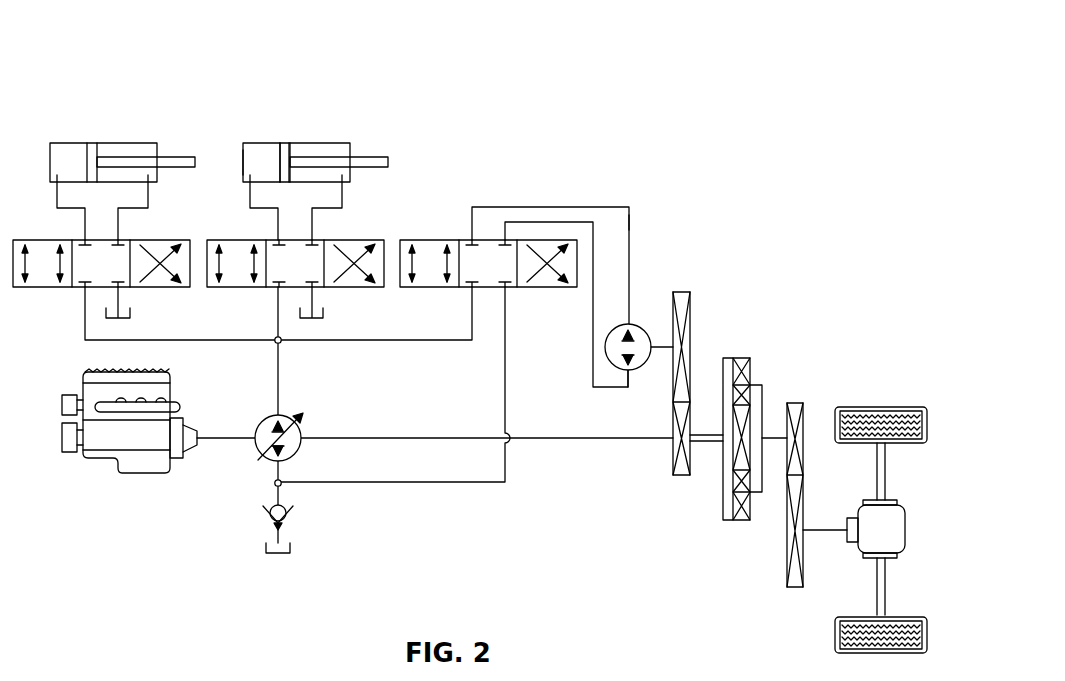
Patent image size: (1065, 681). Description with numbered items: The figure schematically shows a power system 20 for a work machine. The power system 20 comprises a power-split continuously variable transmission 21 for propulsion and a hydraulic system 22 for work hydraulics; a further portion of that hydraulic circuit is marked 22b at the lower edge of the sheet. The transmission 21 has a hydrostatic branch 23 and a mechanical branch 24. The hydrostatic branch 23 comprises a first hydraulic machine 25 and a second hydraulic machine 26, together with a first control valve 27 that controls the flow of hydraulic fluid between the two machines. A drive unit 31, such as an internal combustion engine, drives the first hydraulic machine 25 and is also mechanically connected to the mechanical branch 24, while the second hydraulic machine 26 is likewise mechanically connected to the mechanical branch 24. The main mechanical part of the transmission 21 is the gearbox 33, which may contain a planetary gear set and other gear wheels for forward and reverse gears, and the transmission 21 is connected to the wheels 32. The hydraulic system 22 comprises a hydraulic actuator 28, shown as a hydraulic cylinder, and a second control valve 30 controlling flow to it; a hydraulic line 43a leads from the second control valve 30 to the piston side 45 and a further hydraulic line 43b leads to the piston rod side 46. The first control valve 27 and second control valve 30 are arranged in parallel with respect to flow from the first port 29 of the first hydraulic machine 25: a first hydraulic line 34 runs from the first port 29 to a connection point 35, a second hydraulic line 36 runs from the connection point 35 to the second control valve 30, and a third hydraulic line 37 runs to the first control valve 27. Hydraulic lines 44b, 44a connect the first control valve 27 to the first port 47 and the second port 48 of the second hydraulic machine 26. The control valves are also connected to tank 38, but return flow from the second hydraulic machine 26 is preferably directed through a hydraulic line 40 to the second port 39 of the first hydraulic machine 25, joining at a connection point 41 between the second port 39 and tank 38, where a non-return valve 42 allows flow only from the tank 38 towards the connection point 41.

The power system 20 is at (707, 130).
The power-split continuously variable transmission 21 is at (773, 300).
The hydraulic system 22 is at (238, 80).
The hydraulic circuit 22b is at (140, 680).
The hydrostatic branch 23 is at (629, 222).
The mechanical branch 24 is at (555, 440).
The first hydraulic machine 25 is at (258, 427).
The second hydraulic machine 26 is at (643, 330).
The first control valve 27 is at (432, 240).
The hydraulic actuator 28 is at (360, 100).
The first port 29 is at (276, 415).
The second control valve 30 is at (352, 240).
The drive unit 31 is at (126, 473).
The wheels 32 is at (862, 407).
The gearbox 33 is at (707, 500).
The first hydraulic line 34 is at (281, 378).
The connection point 35 is at (281, 343).
The second hydraulic line 36 is at (278, 314).
The third hydraulic line 37 is at (436, 341).
The tank 38 is at (325, 316).
The second port 39 is at (273, 470).
The hydraulic line 40 is at (462, 482).
The connection point 41 is at (272, 483).
The non-return valve 42 is at (289, 511).
The hydraulic line 43a is at (250, 197).
The hydraulic line 43b is at (345, 197).
The hydraulic line 44a is at (593, 207).
The hydraulic line 44b is at (530, 222).
The piston side 45 is at (267, 158).
The piston rod side 46 is at (318, 143).
The first port 47 is at (622, 372).
The second port 48 is at (631, 325).